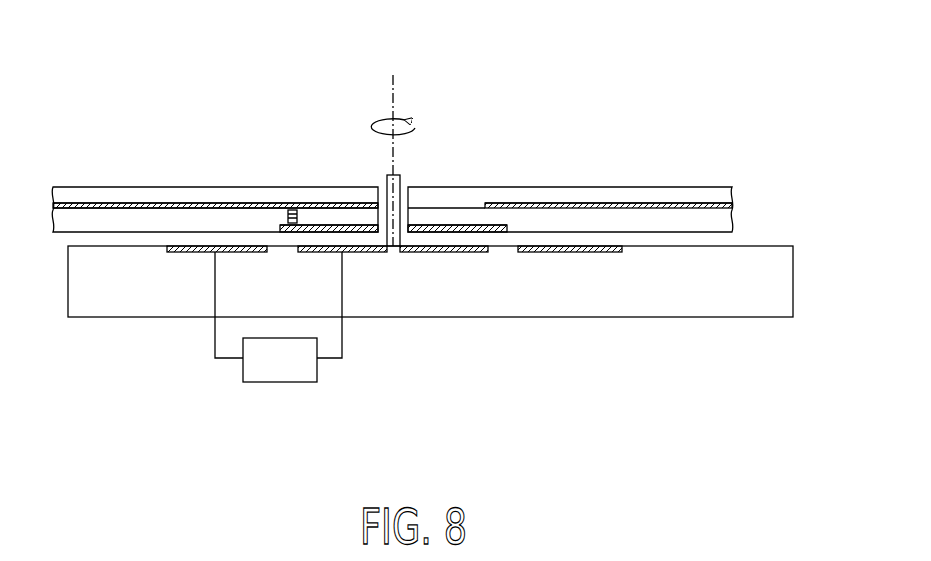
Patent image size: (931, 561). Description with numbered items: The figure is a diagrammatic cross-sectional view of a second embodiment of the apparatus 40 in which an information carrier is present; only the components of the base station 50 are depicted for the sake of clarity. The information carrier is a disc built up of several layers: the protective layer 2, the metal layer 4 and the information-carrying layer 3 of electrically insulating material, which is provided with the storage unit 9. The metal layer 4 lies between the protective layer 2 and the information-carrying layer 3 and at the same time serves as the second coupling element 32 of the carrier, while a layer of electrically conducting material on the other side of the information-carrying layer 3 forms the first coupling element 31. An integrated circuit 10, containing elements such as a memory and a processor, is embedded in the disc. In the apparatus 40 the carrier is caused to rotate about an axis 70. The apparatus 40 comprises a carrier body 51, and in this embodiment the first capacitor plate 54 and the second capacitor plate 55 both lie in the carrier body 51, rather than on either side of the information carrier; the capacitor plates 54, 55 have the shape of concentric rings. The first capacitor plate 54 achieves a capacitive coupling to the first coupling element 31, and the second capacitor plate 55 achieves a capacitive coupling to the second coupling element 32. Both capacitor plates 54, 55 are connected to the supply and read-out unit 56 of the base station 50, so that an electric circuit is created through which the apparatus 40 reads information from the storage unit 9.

The apparatus 40 is at (134, 90).
The protective layer 2 is at (68, 196).
The metal layer 4 is at (107, 205).
The information-carrying layer 3 is at (143, 218).
The storage unit 9 is at (197, 228).
The second coupling element 32 is at (257, 197).
The integrated circuit 10 is at (303, 214).
The first coupling element 31 is at (358, 219).
The axis 70 is at (393, 87).
The base station 50 is at (120, 380).
The carrier body 51 is at (727, 305).
The first capacitor plate 54 is at (370, 252).
The second capacitor plate 55 is at (185, 252).
The supply and read-out unit 56 is at (287, 382).